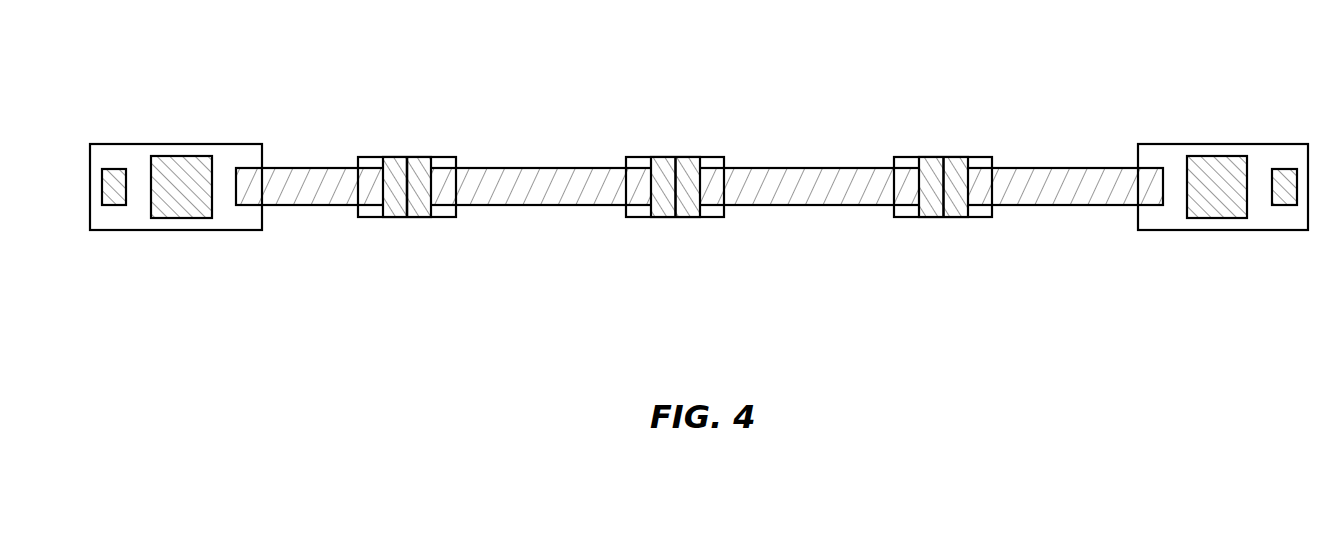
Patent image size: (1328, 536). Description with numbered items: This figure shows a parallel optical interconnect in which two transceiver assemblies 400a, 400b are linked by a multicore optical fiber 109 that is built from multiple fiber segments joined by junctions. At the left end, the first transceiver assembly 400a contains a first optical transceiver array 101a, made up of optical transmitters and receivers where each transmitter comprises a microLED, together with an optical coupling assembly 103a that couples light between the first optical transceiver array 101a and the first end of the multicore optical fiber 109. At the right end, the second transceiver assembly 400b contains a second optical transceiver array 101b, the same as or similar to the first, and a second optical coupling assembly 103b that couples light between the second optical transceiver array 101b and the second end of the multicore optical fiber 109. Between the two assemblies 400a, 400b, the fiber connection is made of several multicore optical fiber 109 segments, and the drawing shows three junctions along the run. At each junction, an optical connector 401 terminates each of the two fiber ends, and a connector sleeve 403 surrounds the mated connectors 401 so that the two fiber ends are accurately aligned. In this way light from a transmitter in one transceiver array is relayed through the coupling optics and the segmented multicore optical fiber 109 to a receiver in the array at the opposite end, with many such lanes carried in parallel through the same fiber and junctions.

The first optical transceiver array 101a is at (113, 168).
The second optical transceiver array 101b is at (1286, 168).
The optical coupling assembly 103a is at (182, 156).
The second optical coupling assembly 103b is at (1219, 156).
The multicore optical fiber 109 is at (307, 182).
The parallel optical interconnect transceiver assembly 400a is at (175, 230).
The parallel optical interconnect transceiver assembly 400b is at (1222, 230).
The optical connector 401 is at (395, 165).
The connector sleeve 403 is at (370, 217).